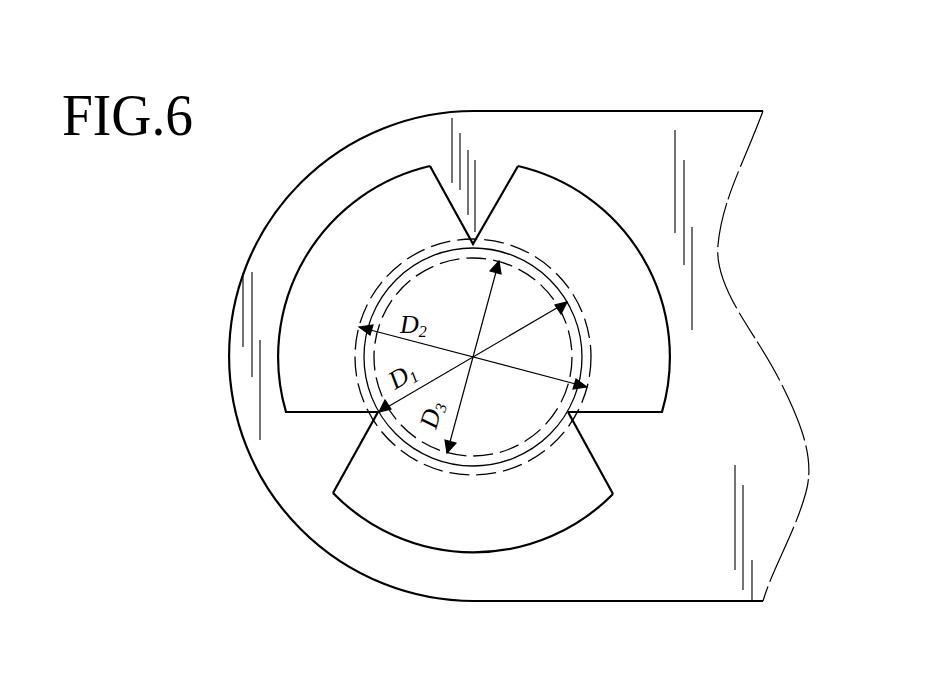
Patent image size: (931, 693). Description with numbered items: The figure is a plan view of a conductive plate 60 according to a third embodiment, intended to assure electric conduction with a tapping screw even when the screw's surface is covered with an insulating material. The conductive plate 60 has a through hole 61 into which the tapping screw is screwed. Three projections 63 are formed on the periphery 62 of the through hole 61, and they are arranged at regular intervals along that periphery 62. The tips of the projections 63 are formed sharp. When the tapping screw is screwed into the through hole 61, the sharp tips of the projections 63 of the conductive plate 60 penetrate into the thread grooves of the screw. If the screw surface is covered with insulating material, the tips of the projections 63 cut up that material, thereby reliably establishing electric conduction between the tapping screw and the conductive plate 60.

The conductive plate 60 is at (639, 110).
The through hole 61 is at (348, 243).
The periphery 62 is at (470, 552).
The projections 63 is at (503, 182).